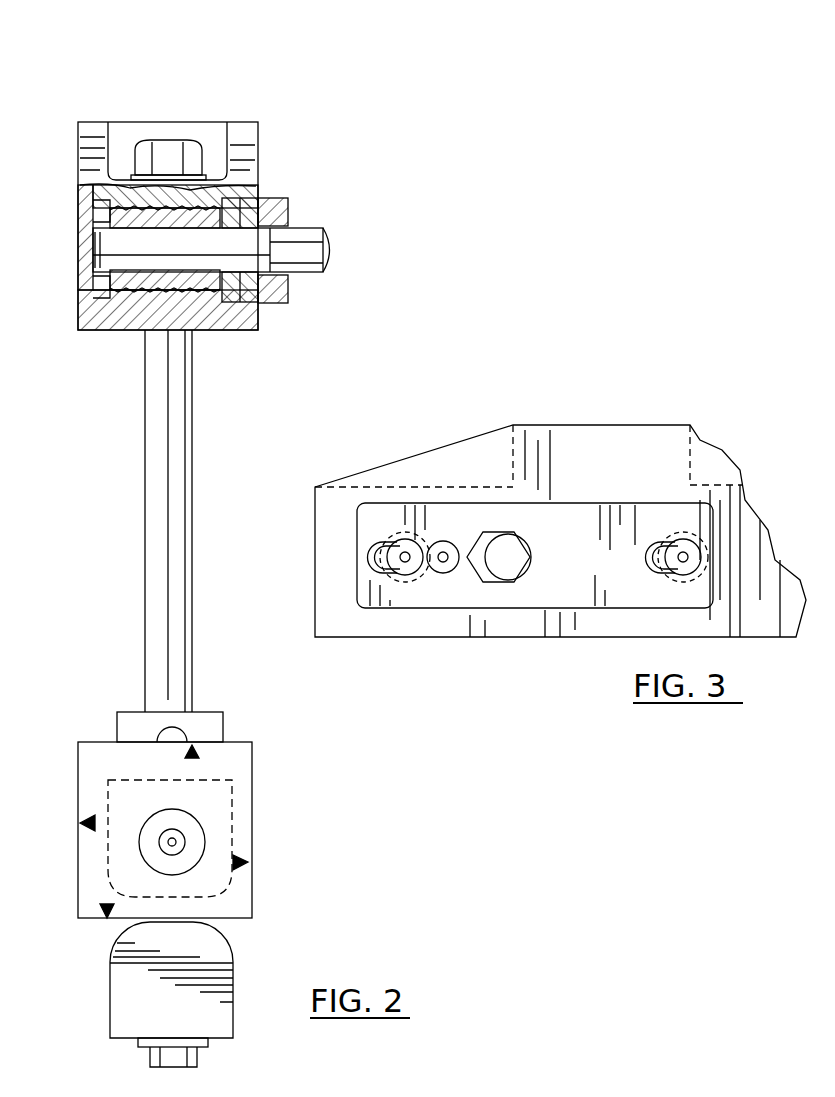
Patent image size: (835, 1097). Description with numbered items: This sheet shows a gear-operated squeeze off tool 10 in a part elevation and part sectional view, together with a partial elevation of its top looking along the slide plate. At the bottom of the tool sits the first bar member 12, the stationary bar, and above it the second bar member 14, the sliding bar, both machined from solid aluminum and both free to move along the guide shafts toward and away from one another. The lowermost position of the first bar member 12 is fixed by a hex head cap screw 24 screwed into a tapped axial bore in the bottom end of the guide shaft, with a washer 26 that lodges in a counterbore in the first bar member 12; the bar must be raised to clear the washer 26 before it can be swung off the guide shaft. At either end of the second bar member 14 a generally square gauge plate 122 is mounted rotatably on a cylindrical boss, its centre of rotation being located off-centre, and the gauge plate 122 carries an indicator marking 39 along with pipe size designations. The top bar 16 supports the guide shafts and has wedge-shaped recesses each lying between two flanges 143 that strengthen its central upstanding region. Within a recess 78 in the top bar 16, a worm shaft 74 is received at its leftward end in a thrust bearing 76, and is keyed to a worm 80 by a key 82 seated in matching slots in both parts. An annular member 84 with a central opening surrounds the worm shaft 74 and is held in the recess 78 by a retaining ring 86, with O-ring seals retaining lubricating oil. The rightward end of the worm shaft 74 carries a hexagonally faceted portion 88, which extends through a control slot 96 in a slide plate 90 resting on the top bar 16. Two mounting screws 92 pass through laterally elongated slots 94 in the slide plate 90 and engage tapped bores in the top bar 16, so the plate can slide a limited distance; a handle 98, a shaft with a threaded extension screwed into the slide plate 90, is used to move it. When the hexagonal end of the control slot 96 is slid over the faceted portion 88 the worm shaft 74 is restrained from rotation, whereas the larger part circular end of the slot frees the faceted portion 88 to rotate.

In FIG. 2, the gear-operated squeeze off tool 10 is at (112, 76).
In FIG. 2, the first bar member 12 is at (218, 982).
In FIG. 2, the second bar member 14 is at (232, 865).
In FIG. 2, the top bar 16 is at (233, 122).
In FIG. 3, the top bar 16 is at (318, 562).
In FIG. 2, the hex head cap screw 24 is at (150, 1058).
In FIG. 2, the washer 26 is at (210, 1045).
In FIG. 2, the indicator dial 39 is at (178, 842).
In FIG. 2, the worm shaft 74 is at (100, 245).
In FIG. 2, the thrust bearing 76 is at (95, 200).
In FIG. 2, the recess 78 is at (120, 210).
In FIG. 2, the worm 80 is at (172, 212).
In FIG. 2, the key 82 is at (130, 330).
In FIG. 2, the annular member 84 is at (252, 205).
In FIG. 2, the retaining ring 86 is at (258, 320).
In FIG. 2, the hexagonally faceted portion 88 is at (333, 248).
In FIG. 3, the hexagonally faceted portion 88 is at (535, 560).
In FIG. 2, the slide plate 90 is at (288, 290).
In FIG. 3, the slide plate 90 is at (585, 510).
In FIG. 3, the mounting screw 92 is at (403, 540).
In FIG. 3, the laterally elongated slot 94 is at (375, 570).
In FIG. 3, the control slot 96 is at (480, 535).
In FIG. 3, the handle 98 is at (448, 541).
In FIG. 2, the gauge plate 122 is at (252, 755).
In FIG. 2, the flange 143 is at (92, 130).